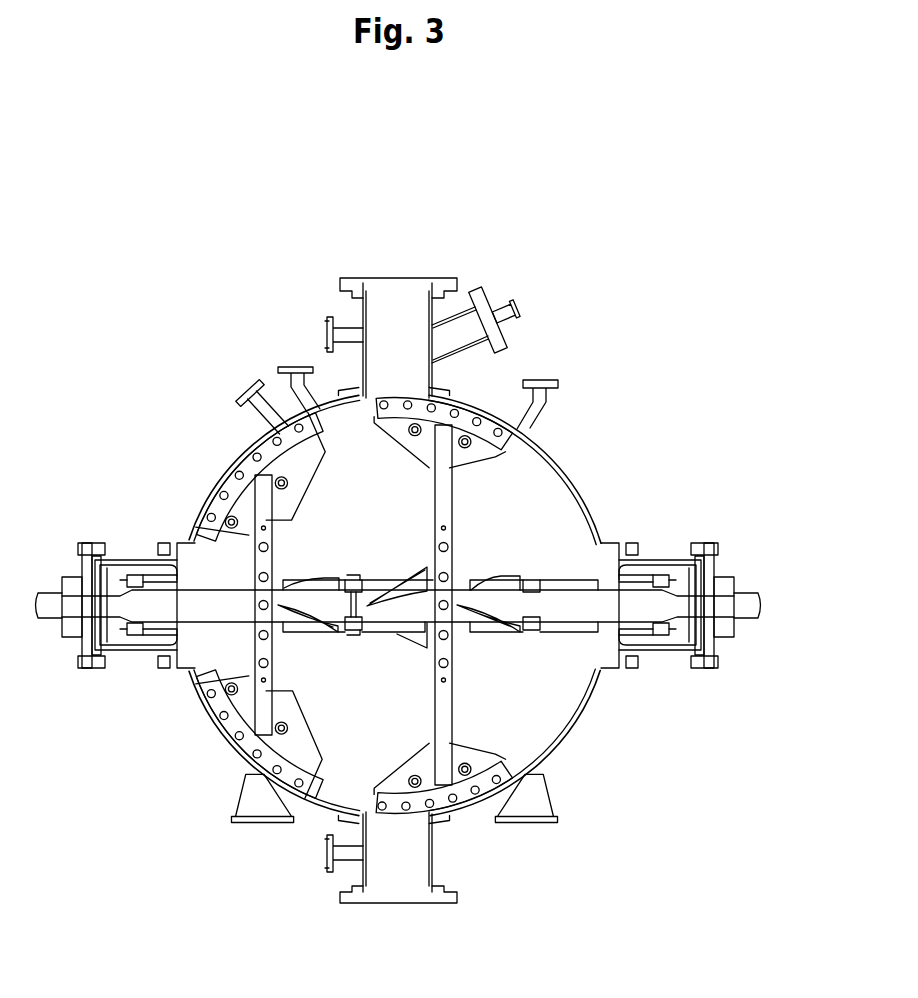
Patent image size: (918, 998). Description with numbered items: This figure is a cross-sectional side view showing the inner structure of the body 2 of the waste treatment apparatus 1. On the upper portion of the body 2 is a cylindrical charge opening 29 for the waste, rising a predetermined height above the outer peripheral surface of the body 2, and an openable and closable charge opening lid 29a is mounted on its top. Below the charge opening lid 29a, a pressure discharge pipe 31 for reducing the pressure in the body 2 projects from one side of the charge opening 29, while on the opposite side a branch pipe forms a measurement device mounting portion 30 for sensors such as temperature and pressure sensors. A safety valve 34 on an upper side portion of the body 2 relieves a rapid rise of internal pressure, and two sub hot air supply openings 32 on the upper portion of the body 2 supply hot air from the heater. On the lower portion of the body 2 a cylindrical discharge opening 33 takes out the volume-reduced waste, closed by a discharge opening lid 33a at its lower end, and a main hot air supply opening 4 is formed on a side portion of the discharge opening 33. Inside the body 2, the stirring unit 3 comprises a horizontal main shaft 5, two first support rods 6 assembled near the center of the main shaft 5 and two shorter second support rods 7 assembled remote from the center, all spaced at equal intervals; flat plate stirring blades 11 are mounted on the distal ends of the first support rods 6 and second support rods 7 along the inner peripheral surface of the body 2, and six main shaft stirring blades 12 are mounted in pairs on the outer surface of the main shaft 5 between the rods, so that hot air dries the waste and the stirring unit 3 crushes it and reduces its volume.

The processing apparatus 1 is at (602, 270).
The body 2 is at (580, 480).
The stirring unit 3 is at (398, 605).
The main hot air supply opening 4 is at (333, 852).
The main shaft 5 is at (617, 596).
The first support rod 6 is at (451, 502).
The second support rod 7 is at (257, 560).
The stirring blade 11 is at (470, 413).
The main shaft stirring blade 12 is at (320, 578).
The charge opening 29 is at (384, 301).
The charge opening lid 29a is at (355, 278).
The measurement device mounting portion 30 is at (472, 318).
The pressure discharge pipe 31 is at (333, 336).
The sub hot air supply opening 32 is at (297, 368).
The discharge opening 33 is at (410, 896).
The discharge opening lid 33a is at (445, 905).
The safety valve 34 is at (251, 392).